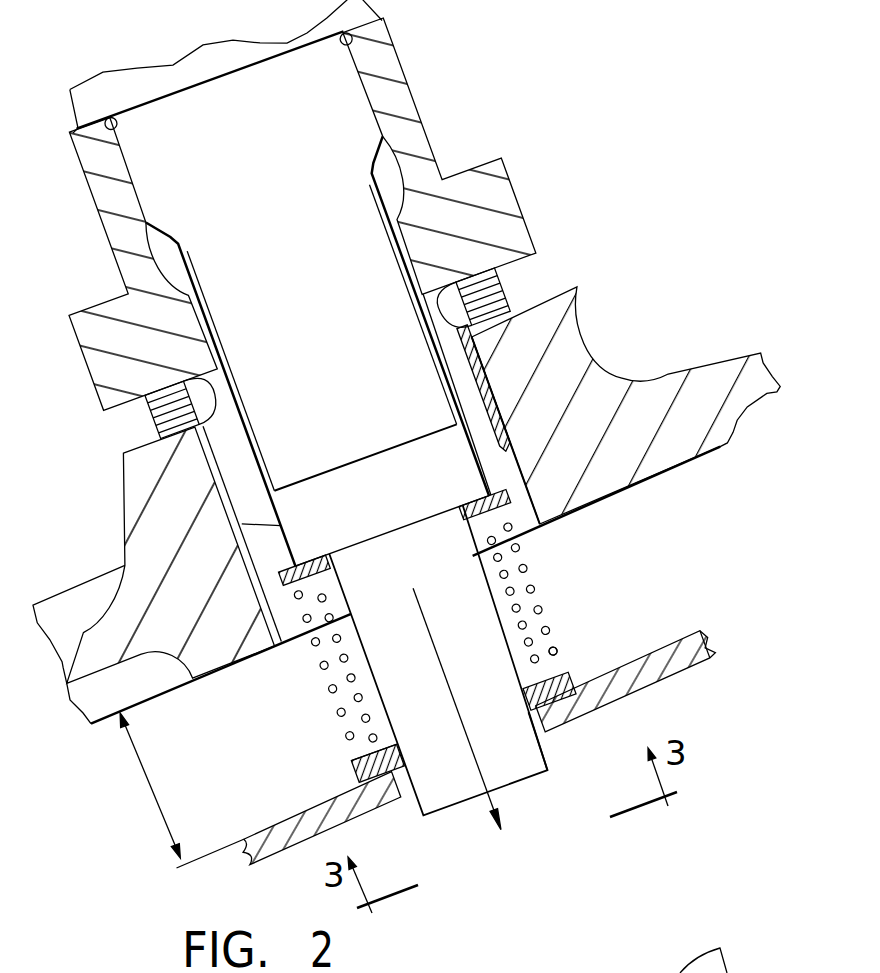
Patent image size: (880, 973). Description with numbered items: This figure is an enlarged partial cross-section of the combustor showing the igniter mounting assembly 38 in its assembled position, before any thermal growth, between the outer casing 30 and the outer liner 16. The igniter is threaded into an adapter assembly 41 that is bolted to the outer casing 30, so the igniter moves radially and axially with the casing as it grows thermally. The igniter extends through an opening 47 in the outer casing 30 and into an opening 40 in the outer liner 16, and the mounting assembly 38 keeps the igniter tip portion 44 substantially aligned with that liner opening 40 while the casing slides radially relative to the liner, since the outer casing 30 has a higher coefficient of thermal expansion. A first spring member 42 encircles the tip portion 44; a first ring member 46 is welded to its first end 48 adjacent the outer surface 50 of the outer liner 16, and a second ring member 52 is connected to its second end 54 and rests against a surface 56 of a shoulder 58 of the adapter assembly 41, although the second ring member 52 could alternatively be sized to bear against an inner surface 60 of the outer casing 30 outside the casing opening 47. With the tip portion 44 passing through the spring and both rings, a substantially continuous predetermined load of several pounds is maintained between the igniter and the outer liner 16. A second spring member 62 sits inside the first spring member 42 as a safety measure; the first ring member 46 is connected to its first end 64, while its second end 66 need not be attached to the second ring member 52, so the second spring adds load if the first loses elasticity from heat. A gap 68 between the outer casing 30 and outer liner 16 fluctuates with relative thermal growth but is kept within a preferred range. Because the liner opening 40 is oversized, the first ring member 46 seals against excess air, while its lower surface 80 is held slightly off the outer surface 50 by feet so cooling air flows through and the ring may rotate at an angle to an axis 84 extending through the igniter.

The outer liner 16 is at (697, 638).
The outer casing 30 is at (710, 382).
The igniter mounting assembly 38 is at (556, 560).
The opening in outer liner 40 is at (393, 793).
The adapter assembly 41 is at (500, 202).
The first spring member 42 is at (562, 621).
The tip portion of igniter 44 is at (553, 765).
The first ring member 46 is at (348, 770).
The opening in outer casing 47 is at (540, 513).
The first end of first spring member 48 is at (557, 647).
The outer surface of outer liner 50 is at (698, 634).
The second ring member 52 is at (502, 475).
The second end of first spring member 54 is at (510, 523).
The surface of shoulder 56 is at (417, 537).
The shoulder 58 is at (348, 495).
The inner surface of outer casing 60 is at (678, 462).
The second spring member 62 is at (318, 669).
The first end of second spring member 64 is at (362, 737).
The second end of second spring member 66 is at (322, 598).
The gap 68 is at (147, 790).
The lower surface of first ring member 80 is at (560, 693).
The axis 84 is at (453, 697).